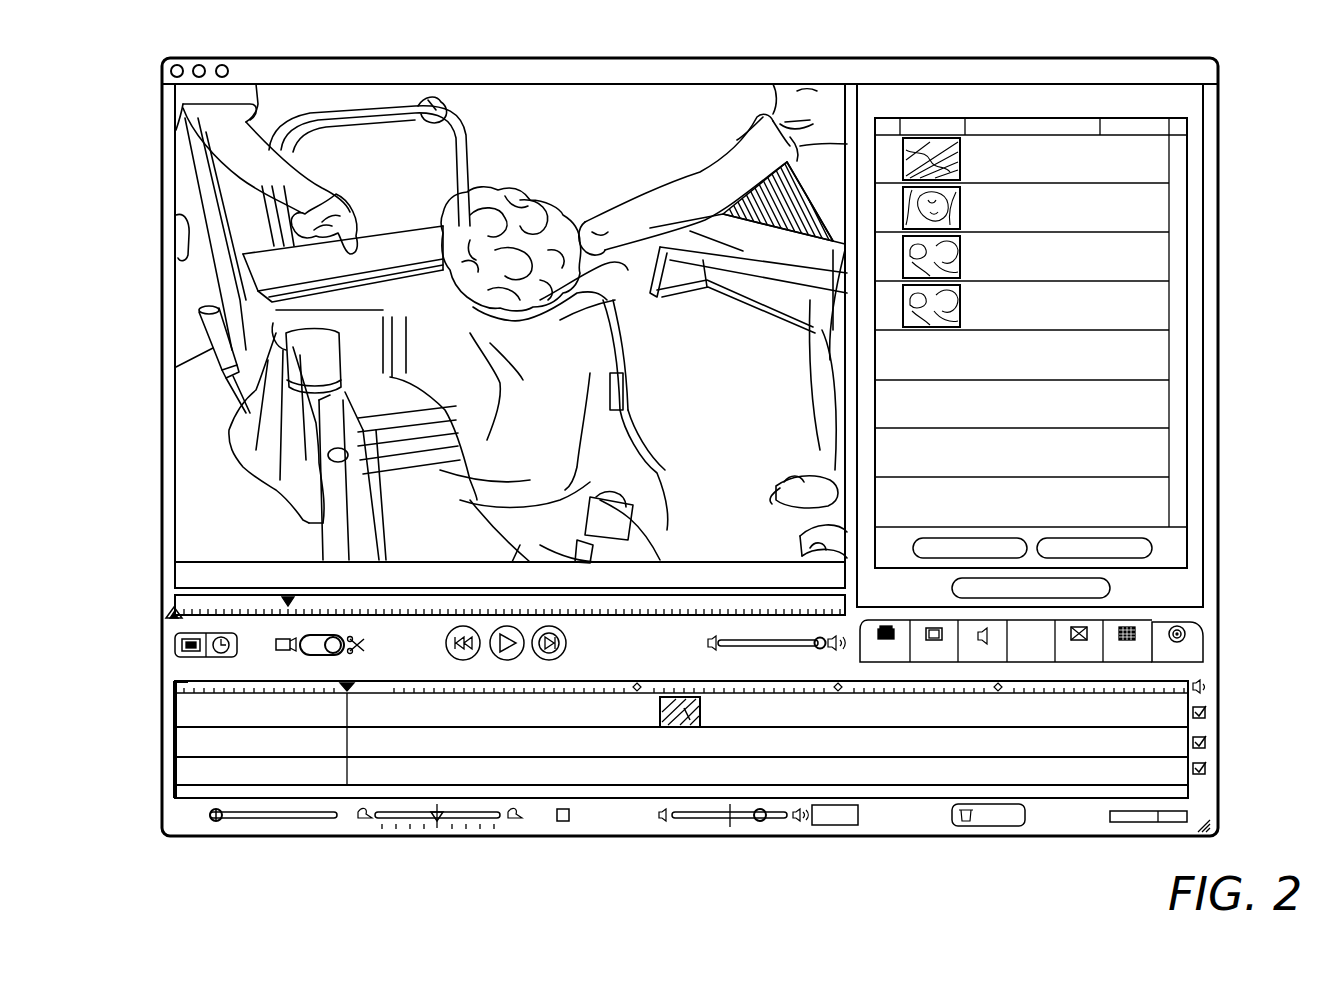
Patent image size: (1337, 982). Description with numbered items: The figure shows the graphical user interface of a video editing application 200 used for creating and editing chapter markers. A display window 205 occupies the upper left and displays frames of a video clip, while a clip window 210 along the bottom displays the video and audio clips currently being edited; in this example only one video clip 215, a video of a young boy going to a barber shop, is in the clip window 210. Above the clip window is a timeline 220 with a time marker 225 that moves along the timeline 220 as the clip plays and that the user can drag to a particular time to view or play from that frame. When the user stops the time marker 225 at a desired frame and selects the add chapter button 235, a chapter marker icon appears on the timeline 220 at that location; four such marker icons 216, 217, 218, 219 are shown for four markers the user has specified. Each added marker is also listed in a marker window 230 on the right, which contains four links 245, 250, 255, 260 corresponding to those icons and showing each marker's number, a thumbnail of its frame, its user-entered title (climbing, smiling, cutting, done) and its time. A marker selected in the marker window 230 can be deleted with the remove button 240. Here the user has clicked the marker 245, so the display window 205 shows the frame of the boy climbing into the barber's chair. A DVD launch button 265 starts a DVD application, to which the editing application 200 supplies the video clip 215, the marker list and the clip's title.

The video editing application 200 is at (1226, 78).
The display window 205 is at (178, 140).
The clip window 210 is at (692, 781).
The video clip 215 is at (697, 727).
The marker icon 216 is at (336, 684).
The marker icon 217 is at (637, 692).
The marker icon 218 is at (838, 692).
The marker icon 219 is at (998, 692).
The timeline 220 is at (180, 683).
The time marker 225 is at (344, 686).
The marker window 230 is at (1077, 376).
The add chapter button 235 is at (1015, 536).
The remove button 240 is at (1154, 548).
The marker link 245 is at (1160, 154).
The marker link 250 is at (1160, 206).
The marker link 255 is at (1160, 254).
The marker link 260 is at (1160, 308).
The DVD launch button 265 is at (1112, 590).